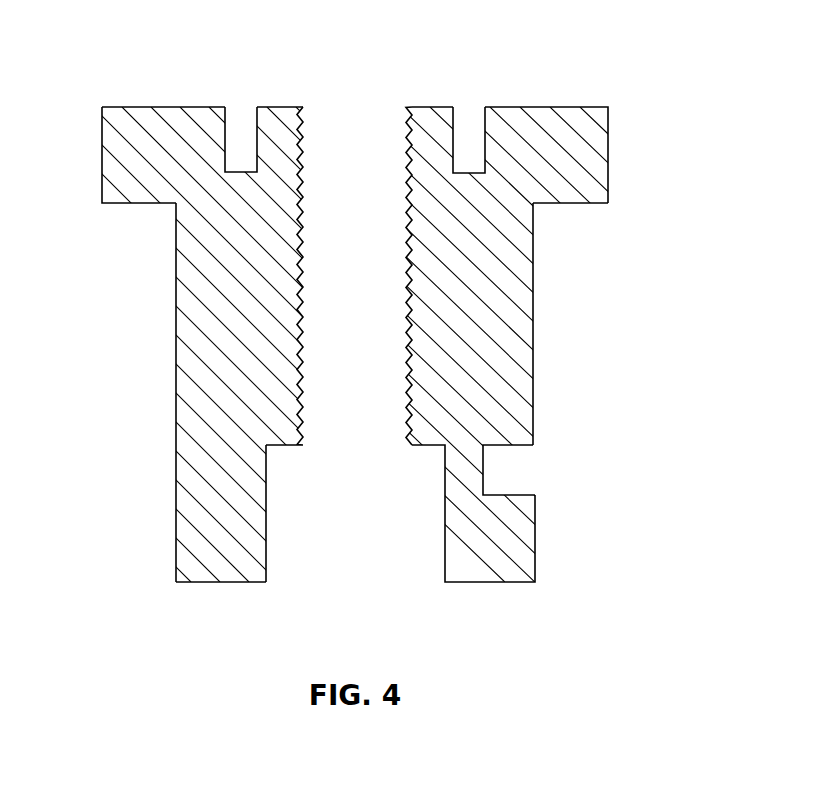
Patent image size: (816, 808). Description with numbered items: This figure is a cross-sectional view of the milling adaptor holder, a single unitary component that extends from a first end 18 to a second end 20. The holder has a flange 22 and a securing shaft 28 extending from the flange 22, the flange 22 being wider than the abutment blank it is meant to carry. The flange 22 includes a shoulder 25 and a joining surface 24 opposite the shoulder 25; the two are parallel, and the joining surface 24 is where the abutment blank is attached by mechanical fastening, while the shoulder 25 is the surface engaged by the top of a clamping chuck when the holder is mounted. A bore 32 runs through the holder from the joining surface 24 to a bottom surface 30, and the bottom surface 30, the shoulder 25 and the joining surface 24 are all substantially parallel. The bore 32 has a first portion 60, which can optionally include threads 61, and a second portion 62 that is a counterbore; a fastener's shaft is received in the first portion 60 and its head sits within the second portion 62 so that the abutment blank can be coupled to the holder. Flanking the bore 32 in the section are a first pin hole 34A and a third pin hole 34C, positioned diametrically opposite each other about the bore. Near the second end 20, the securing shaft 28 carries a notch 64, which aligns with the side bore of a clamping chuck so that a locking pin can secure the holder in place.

The first end 18 is at (413, 314).
The second end 20 is at (547, 560).
The flange 22 is at (385, 331).
The joining surface 24 is at (150, 107).
The shoulder 25 is at (575, 204).
The securing shaft 28 is at (176, 357).
The bottom surface 30 is at (222, 582).
The bore 32 is at (365, 338).
The first pin hole 34A is at (243, 115).
The third pin hole 34C is at (468, 113).
The first portion 60 is at (355, 112).
The threads 61 is at (408, 118).
The second portion 62 is at (358, 568).
The notch 64 is at (528, 473).